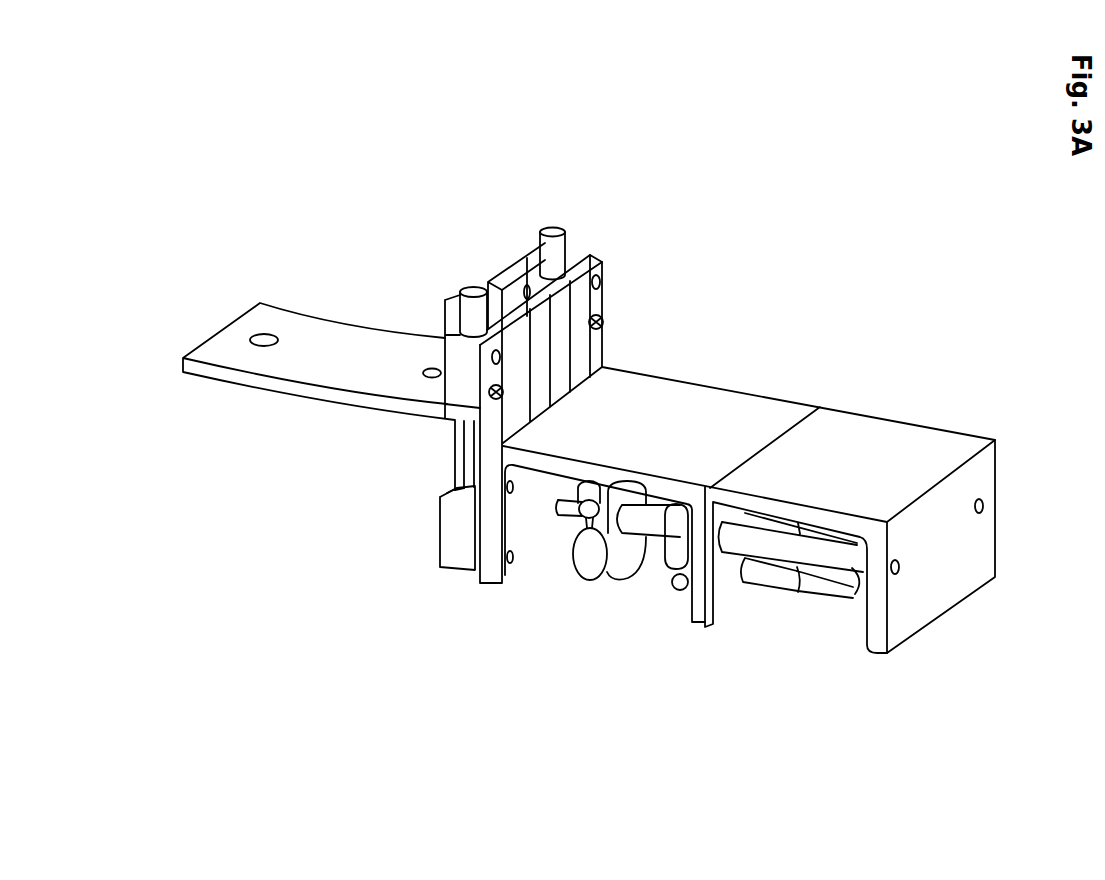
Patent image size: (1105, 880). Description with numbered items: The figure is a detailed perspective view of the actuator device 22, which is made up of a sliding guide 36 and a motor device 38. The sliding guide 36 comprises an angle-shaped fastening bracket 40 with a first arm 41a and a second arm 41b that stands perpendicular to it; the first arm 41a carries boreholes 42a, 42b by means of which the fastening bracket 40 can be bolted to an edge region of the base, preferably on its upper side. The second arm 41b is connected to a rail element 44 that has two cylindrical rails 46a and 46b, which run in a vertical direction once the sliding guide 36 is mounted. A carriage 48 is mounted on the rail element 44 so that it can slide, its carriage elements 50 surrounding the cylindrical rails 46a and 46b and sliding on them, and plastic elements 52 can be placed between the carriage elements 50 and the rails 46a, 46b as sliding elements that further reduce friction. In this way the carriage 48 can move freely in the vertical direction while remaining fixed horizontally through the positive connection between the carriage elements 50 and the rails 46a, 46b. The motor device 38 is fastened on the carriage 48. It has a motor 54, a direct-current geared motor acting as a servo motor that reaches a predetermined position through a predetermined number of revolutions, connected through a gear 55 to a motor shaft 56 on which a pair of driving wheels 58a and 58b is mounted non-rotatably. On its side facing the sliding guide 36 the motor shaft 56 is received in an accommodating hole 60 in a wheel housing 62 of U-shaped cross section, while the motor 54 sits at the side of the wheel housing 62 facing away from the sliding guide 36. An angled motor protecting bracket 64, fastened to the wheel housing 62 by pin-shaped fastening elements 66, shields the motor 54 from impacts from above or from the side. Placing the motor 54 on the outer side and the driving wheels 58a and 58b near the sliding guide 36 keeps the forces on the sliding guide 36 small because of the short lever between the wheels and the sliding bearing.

The actuator device 22 is at (848, 151).
The sliding guide 36 is at (557, 182).
The motor device 38 is at (781, 358).
The fastening bracket 40 is at (343, 333).
The first arm 41a is at (302, 392).
The second arm 41b is at (445, 305).
The borehole 42a is at (257, 346).
The borehole 42b is at (437, 372).
The rail element 44 is at (504, 270).
The cylindrical rail 46a is at (558, 250).
The cylindrical rail 46b is at (465, 292).
The carriage 48 is at (598, 297).
The carriage element 50 is at (450, 530).
The plastic element 52 is at (437, 496).
The motor 54 is at (833, 580).
The gear 55 is at (767, 573).
The motor shaft 56 is at (641, 548).
The driving wheel 58a is at (570, 575).
The driving wheel 58b is at (659, 594).
The accommodating hole 60 is at (586, 518).
The wheel housing 62 is at (658, 383).
The motor protecting bracket 64 is at (947, 442).
The pin-shaped fastening element 66 is at (852, 568).